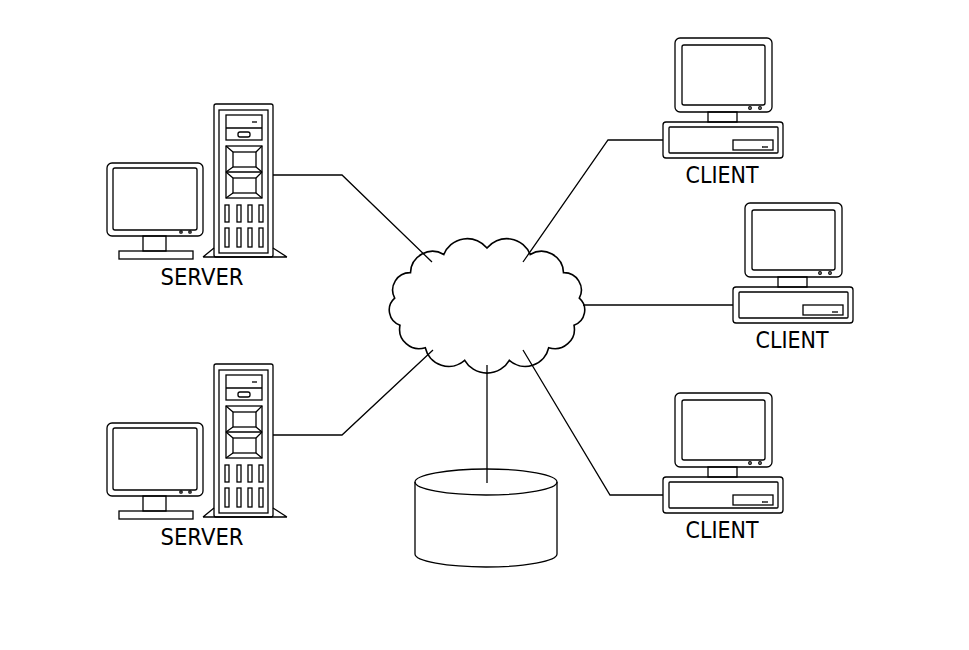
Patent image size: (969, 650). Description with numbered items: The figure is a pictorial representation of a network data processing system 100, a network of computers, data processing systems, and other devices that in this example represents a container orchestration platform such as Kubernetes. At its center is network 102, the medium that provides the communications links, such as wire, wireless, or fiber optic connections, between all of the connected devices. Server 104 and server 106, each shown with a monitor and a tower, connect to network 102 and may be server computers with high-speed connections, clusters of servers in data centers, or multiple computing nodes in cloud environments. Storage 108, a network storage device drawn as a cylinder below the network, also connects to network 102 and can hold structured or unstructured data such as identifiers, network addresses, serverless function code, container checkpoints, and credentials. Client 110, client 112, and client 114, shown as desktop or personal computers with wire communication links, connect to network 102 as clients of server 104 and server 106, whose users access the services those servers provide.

The network data processing system 100 is at (349, 80).
The network 102 is at (462, 252).
The server 104 is at (107, 203).
The server 106 is at (107, 458).
The storage 108 is at (415, 518).
The client 110 is at (783, 130).
The client 112 is at (853, 315).
The client 114 is at (783, 502).